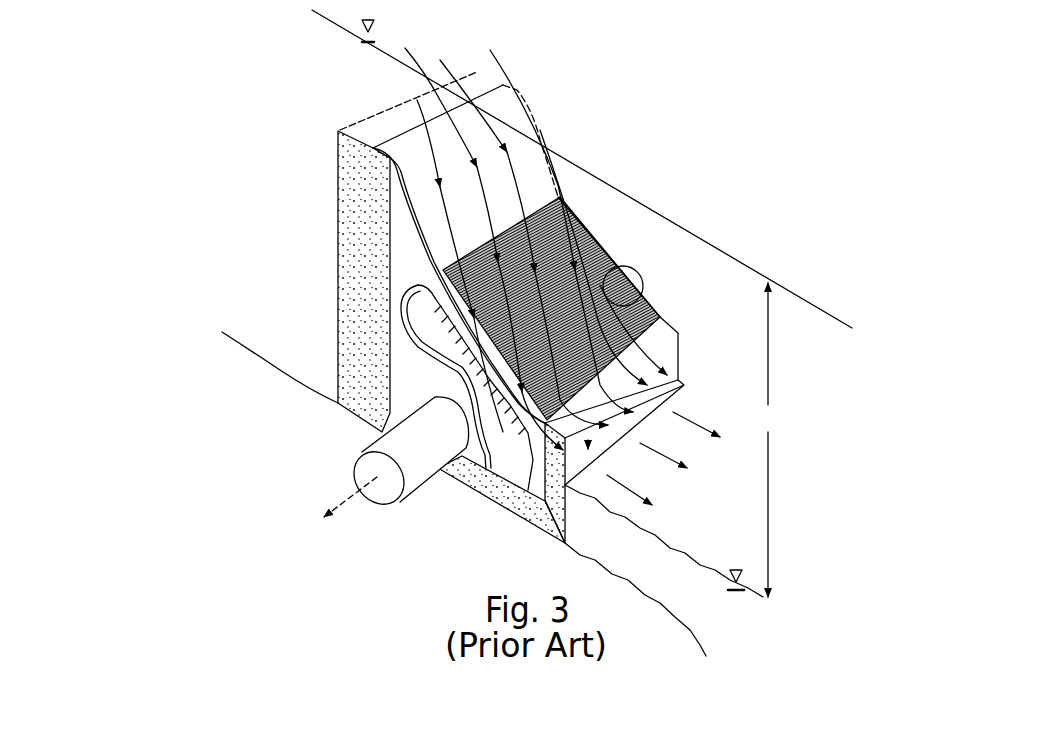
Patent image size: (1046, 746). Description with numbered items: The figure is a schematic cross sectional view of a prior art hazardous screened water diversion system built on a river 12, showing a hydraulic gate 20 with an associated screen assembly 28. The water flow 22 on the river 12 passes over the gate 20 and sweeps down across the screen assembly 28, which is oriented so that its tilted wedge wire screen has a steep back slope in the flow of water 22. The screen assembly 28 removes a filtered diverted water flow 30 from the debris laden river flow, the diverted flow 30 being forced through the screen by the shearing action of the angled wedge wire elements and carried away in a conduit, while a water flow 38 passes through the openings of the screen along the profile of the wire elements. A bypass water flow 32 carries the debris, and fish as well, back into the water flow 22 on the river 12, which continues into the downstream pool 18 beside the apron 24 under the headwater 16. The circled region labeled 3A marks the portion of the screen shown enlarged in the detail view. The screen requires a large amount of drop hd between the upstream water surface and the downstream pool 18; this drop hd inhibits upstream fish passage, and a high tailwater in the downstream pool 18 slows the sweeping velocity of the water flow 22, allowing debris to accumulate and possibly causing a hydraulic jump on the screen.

The river 12 is at (221, 200).
The headwater reservoir 16 is at (253, 90).
The downstream pool 18 is at (748, 476).
The hydraulic gate 20 is at (338, 345).
The water flow 22 is at (417, 100).
The apron / stilling channel 24 is at (677, 392).
The screen assembly 28 is at (568, 226).
The diverted water flow 30 is at (353, 493).
The bypass water flow 32 is at (527, 522).
The water flow through the screen 38 is at (438, 317).
The detail view indicator 3A is at (623, 286).
The drop hd is at (771, 440).